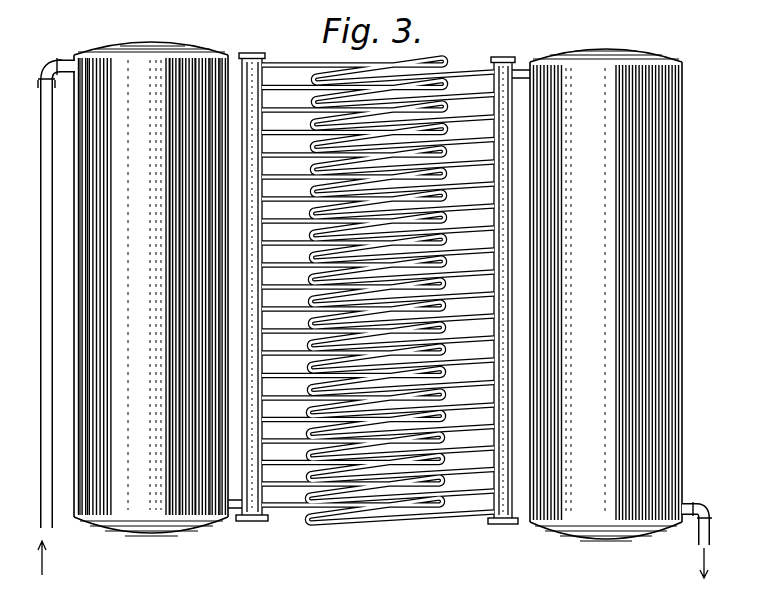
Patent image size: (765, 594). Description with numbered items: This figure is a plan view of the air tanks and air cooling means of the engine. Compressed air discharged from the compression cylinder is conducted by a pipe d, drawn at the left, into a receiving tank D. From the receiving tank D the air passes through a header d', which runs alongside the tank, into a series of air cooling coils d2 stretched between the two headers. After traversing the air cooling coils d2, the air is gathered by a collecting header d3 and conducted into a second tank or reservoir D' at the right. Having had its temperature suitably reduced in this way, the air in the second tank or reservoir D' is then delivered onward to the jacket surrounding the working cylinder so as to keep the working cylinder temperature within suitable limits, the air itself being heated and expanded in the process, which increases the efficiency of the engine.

The receiving tank D is at (151, 289).
The second tank or reservoir D' is at (621, 313).
The pipe d is at (42, 316).
The header d' is at (248, 307).
The air cooling coils d2 is at (327, 500).
The collecting header d3 is at (496, 524).